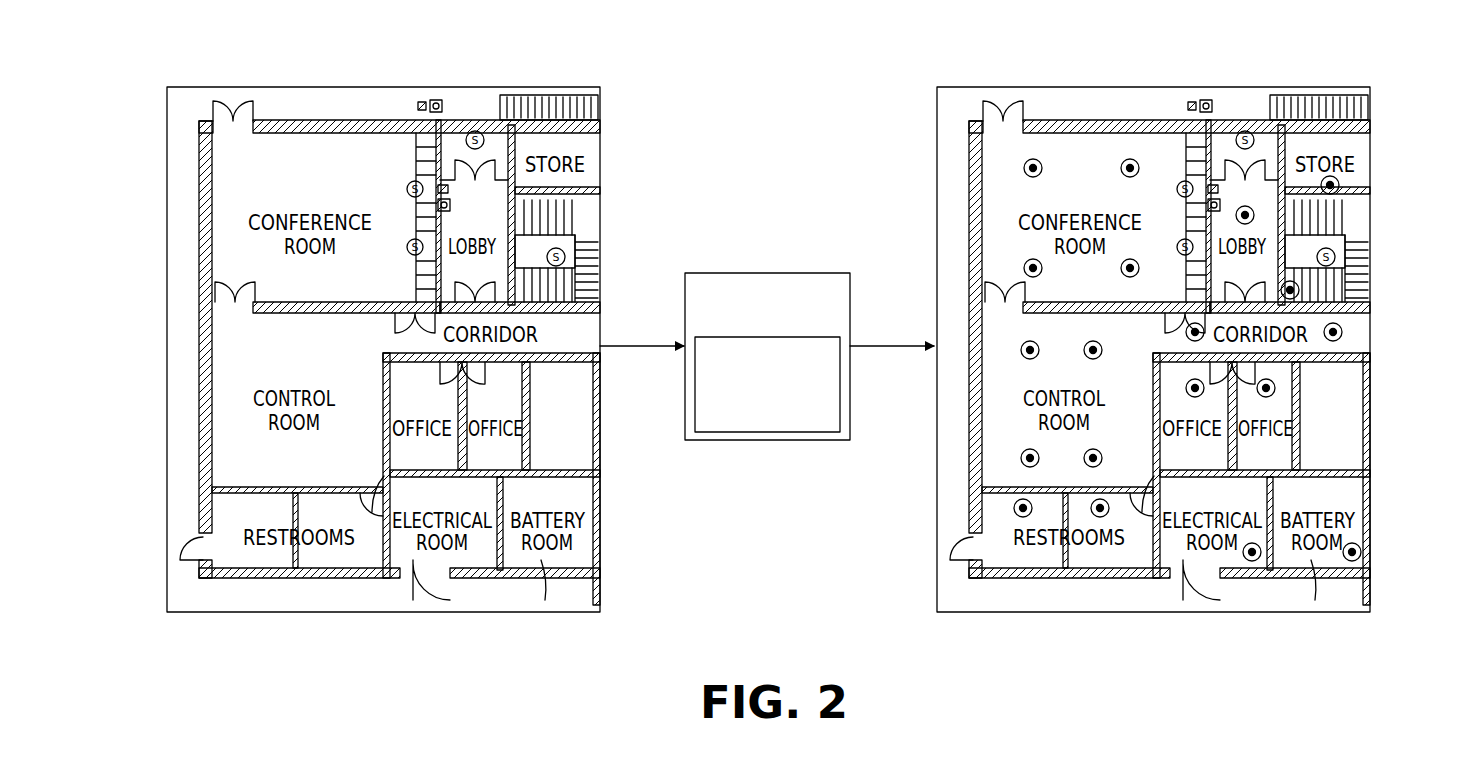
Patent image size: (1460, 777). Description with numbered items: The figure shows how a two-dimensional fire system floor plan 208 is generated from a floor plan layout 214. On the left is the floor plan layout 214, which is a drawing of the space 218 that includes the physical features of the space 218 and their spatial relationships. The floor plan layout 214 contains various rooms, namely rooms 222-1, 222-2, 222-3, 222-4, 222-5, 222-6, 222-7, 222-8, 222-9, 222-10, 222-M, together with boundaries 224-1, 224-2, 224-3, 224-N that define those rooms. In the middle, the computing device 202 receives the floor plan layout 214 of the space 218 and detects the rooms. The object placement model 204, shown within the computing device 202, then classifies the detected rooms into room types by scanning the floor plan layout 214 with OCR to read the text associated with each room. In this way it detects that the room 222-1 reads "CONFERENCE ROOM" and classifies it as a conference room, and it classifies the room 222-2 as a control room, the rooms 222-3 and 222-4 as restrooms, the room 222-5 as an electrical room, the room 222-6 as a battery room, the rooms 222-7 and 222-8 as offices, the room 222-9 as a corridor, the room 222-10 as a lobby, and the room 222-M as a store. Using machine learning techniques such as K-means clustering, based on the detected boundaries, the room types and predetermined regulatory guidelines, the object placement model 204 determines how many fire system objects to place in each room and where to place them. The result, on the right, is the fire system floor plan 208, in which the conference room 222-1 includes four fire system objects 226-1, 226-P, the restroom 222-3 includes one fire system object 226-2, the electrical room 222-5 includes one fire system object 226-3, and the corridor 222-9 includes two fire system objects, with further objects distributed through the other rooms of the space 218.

The computing device 202 is at (768, 273).
The object placement model 204 is at (768, 440).
The fire system floor plan 208 is at (937, 103).
The floor plan layout 214 is at (167, 103).
The space 218 is at (221, 86).
The room 222-1 is at (235, 152).
The room 222-2 is at (240, 345).
The room 222-3 is at (237, 515).
The room 222-4 is at (327, 562).
The room 222-5 is at (420, 562).
The room 222-6 is at (545, 562).
The room 222-7 is at (457, 458).
The room 222-8 is at (513, 447).
The room 222-9 is at (600, 320).
The room 222-10 is at (497, 207).
The room 222-M is at (598, 140).
The boundary 224-1 is at (283, 302).
The boundary 224-2 is at (237, 487).
The boundary 224-3 is at (560, 477).
The boundary 224-N is at (585, 190).
The fire system object 226-1 is at (1036, 158).
The fire system object 226-2 is at (1010, 518).
The fire system object 226-3 is at (1250, 563).
The fire system object 226-P is at (1133, 158).